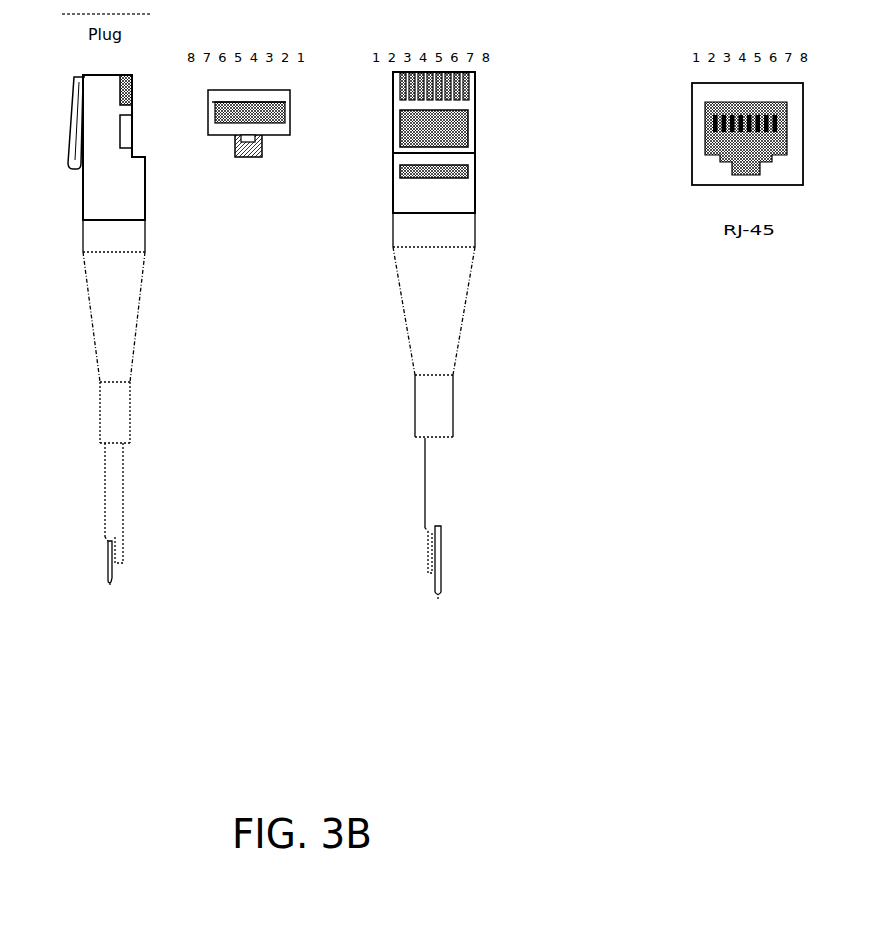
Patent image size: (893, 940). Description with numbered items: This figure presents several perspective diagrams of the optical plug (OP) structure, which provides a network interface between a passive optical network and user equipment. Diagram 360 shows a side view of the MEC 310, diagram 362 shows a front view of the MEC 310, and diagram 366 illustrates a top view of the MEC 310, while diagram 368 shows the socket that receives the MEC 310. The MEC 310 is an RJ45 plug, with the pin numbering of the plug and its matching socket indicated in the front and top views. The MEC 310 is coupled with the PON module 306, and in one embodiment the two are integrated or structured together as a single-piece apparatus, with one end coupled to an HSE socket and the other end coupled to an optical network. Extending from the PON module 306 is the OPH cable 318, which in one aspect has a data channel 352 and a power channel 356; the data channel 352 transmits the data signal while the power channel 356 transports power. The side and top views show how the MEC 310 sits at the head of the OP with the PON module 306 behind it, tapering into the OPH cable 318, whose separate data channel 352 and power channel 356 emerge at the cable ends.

The MEC 310 is at (92, 205).
The diagram 360 is at (70, 180).
The diagram 362 is at (250, 158).
The diagram 366 is at (500, 158).
The diagram 368 is at (690, 118).
The PON module 306 is at (418, 282).
The OPH cable 318 is at (427, 480).
The data channel 352 is at (428, 556).
The power channel 356 is at (438, 599).